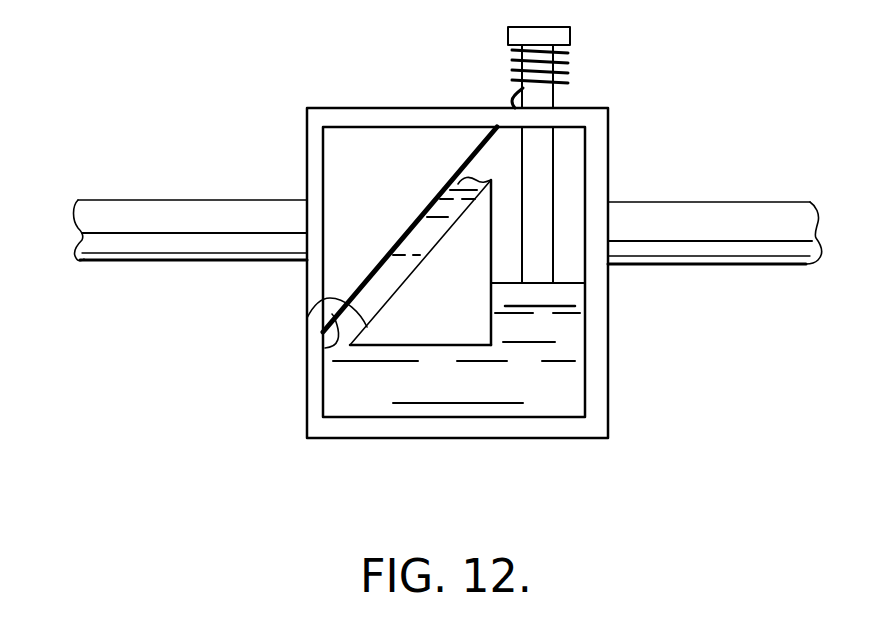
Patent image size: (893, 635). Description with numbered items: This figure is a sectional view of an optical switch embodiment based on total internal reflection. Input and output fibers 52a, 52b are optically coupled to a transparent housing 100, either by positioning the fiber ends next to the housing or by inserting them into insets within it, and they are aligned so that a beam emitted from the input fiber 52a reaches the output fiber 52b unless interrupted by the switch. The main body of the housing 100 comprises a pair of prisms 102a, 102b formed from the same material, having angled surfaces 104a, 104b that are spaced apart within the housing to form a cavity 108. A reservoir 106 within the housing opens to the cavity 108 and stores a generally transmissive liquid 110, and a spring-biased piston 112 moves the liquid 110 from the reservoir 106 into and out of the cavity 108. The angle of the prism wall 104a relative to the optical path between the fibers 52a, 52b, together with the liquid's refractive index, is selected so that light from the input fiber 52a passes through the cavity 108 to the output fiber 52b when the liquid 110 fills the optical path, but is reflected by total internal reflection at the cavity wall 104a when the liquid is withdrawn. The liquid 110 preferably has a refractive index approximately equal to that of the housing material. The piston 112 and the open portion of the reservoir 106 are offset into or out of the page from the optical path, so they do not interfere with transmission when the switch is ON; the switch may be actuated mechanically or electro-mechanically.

The transparent housing 100 is at (387, 108).
The input fiber 52a is at (192, 200).
The output fiber 52b is at (707, 202).
The prism 102a is at (450, 148).
The prism 102b is at (437, 320).
The angled surface 104a is at (325, 348).
The angled surface 104b is at (307, 318).
The reservoir 106 is at (567, 413).
The cavity 108 is at (386, 266).
The transmissive liquid 110 is at (575, 337).
The spring-biased piston 112 is at (555, 283).